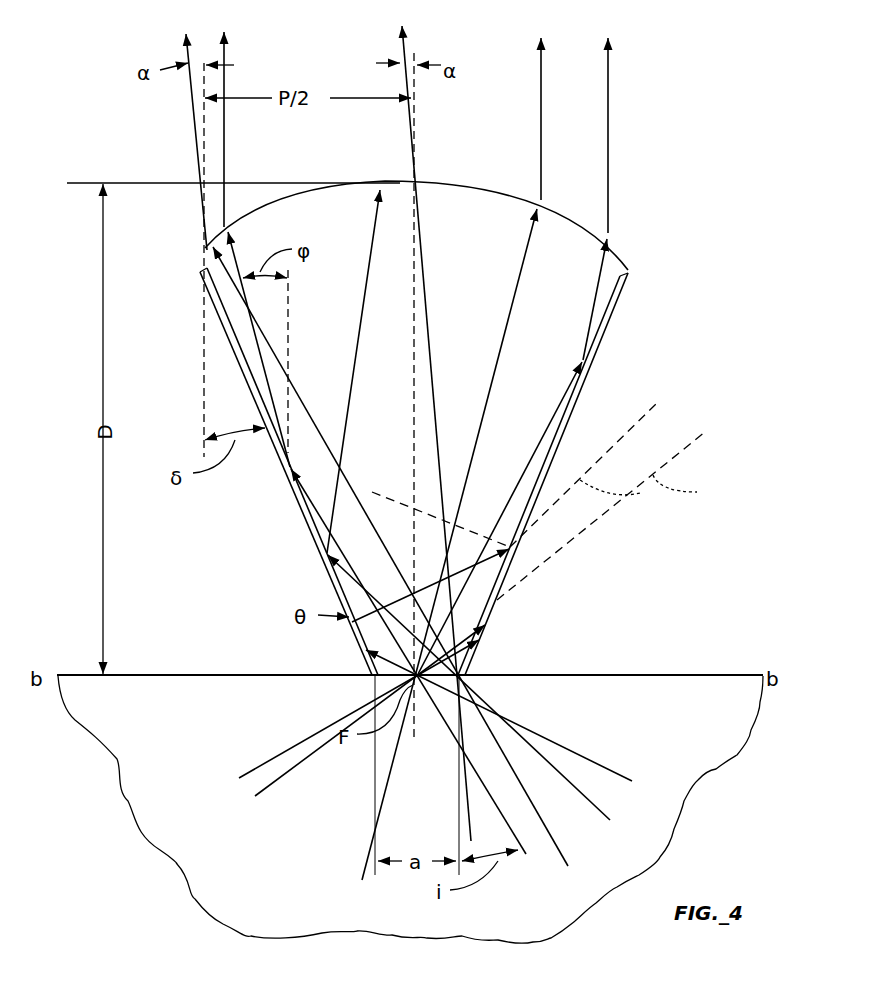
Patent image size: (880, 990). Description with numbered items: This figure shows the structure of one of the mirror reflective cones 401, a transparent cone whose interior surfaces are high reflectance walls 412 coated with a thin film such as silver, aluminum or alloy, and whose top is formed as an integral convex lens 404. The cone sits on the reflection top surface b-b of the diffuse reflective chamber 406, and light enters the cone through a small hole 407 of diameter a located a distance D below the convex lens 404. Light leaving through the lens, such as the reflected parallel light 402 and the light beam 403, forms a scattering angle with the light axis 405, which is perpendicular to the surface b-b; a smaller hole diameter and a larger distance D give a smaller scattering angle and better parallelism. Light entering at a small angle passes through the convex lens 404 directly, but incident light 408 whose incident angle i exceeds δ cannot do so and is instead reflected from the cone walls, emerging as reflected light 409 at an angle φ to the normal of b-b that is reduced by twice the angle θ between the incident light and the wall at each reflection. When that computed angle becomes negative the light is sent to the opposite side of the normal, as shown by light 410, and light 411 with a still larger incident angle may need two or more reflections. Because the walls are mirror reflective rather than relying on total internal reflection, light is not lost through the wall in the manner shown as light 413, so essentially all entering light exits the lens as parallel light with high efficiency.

The mirror reflective cone 401 is at (415, 471).
The reflected parallel light 402 is at (398, 52).
The light beam 403 is at (183, 55).
The convex lens 404 is at (583, 223).
The light axis 405 is at (413, 128).
The diffuse reflective chamber 406 is at (181, 725).
The small hole 407 is at (450, 652).
The incident light 408 is at (528, 852).
The reflected light 409 is at (258, 366).
The light reflected in opposite direction 410 is at (596, 803).
The light with larger incident angle 411 is at (600, 766).
The high reflectance wall 412 is at (565, 405).
The light passing through cone wall 413 is at (660, 490).